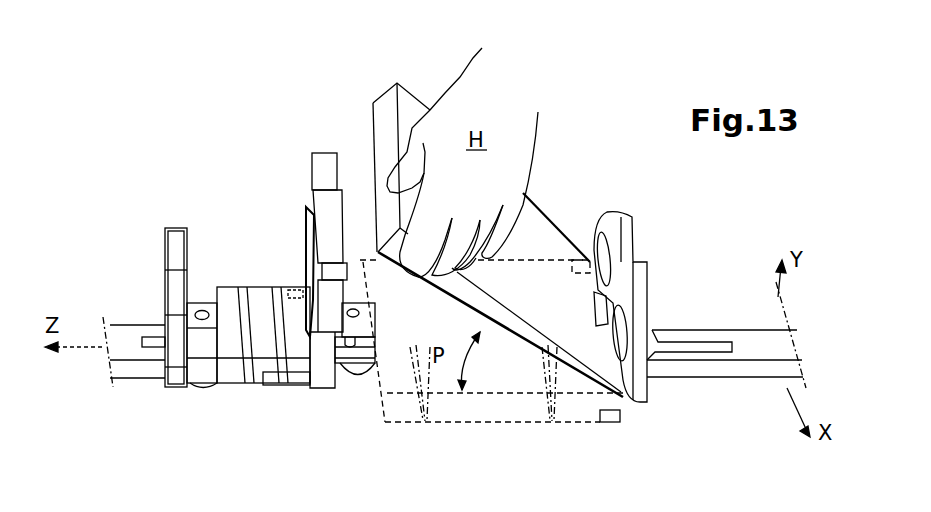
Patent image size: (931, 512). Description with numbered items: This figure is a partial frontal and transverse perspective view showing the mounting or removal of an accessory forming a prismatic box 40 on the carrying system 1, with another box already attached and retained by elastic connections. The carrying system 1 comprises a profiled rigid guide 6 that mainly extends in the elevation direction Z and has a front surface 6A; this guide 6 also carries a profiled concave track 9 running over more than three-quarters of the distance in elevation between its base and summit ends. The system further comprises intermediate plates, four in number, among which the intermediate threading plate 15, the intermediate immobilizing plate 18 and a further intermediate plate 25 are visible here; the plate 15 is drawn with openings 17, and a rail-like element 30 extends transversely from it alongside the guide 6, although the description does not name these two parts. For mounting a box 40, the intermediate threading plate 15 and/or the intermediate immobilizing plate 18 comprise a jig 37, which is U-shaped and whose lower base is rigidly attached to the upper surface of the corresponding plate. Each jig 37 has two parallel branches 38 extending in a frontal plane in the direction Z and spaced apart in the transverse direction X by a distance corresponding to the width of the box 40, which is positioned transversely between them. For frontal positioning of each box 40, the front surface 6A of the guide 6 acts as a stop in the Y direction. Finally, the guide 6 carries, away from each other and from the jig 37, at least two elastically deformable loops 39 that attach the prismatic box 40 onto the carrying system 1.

The carrying system 1 is at (680, 388).
The profiled rigid guide 6 is at (130, 345).
The front surface 6A is at (783, 345).
The profiled concave track 9 is at (703, 336).
The intermediate threading plate 15 is at (633, 230).
The recess 17 is at (597, 240).
The intermediate immobilizing plate 18 is at (310, 203).
The intermediate plate 25 is at (163, 277).
The carriage rail 30 is at (767, 377).
The jig 37 is at (293, 380).
The parallel branches 38 is at (298, 290).
The elastically deformable loops 39 is at (410, 400).
The box 40 is at (253, 295).